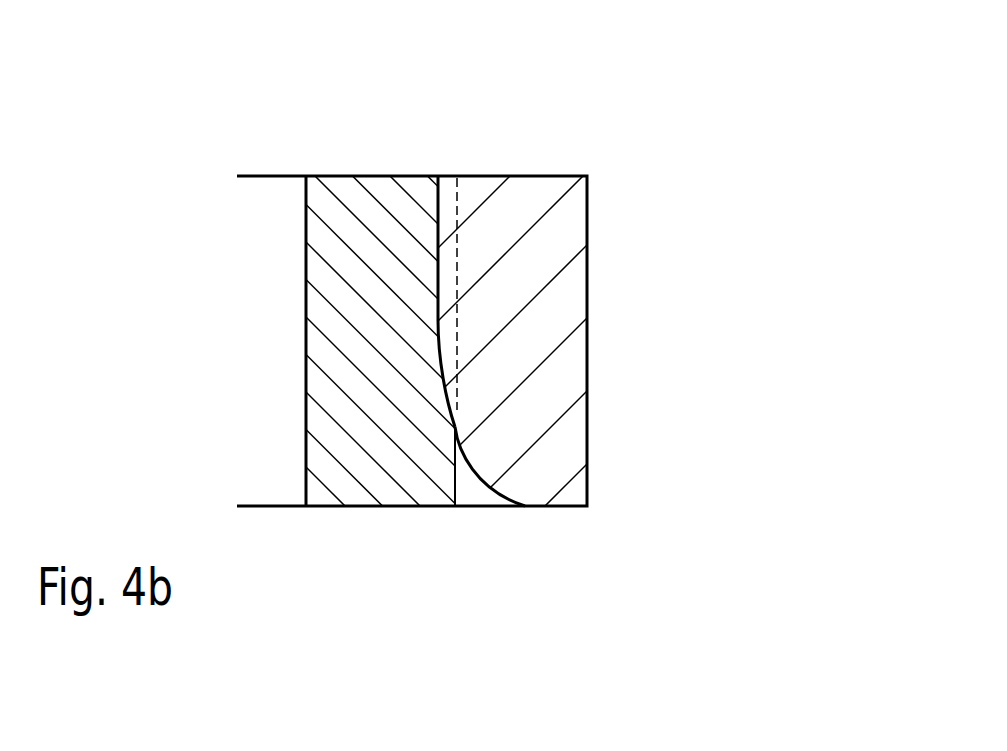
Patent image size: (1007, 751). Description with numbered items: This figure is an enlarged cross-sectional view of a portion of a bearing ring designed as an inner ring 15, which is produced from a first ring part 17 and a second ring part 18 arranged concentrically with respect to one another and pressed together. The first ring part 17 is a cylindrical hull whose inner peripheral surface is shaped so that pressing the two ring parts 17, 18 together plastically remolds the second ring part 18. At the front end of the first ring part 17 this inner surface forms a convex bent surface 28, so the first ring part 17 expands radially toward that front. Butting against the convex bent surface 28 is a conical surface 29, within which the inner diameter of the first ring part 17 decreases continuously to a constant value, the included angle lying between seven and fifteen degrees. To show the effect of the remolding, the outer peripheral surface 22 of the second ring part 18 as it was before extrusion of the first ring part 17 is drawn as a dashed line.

The inner ring 15 is at (665, 298).
The first ring part 17 is at (507, 256).
The second ring part 18 is at (373, 218).
The outer peripheral surface 22 is at (470, 316).
The convex bent surface 28 is at (510, 485).
The conical surface 29 is at (464, 386).